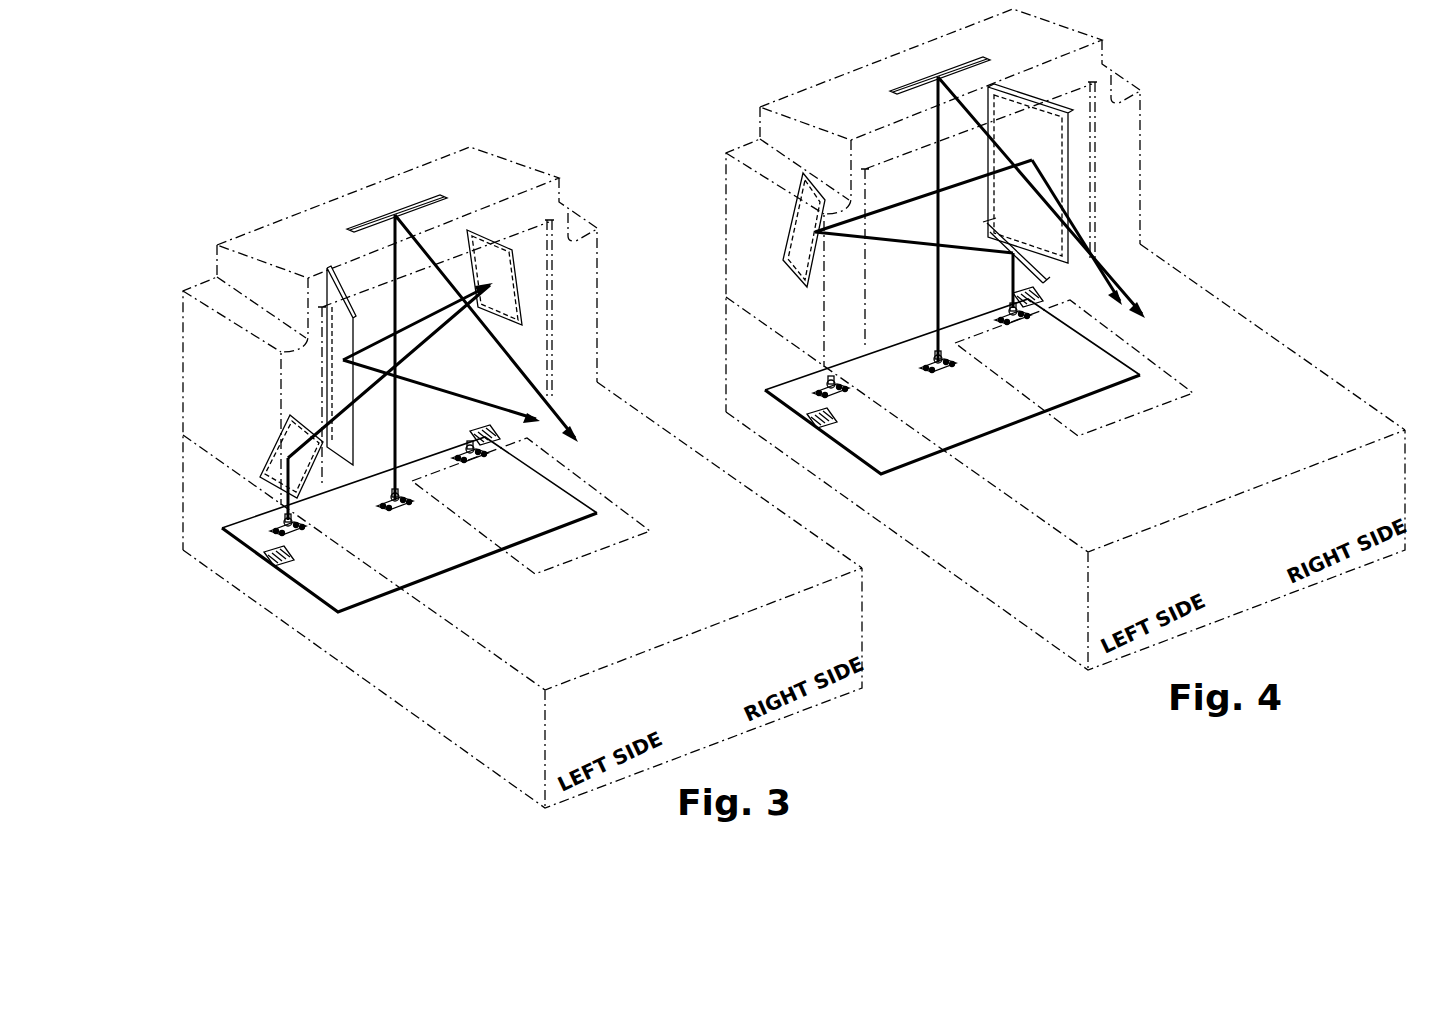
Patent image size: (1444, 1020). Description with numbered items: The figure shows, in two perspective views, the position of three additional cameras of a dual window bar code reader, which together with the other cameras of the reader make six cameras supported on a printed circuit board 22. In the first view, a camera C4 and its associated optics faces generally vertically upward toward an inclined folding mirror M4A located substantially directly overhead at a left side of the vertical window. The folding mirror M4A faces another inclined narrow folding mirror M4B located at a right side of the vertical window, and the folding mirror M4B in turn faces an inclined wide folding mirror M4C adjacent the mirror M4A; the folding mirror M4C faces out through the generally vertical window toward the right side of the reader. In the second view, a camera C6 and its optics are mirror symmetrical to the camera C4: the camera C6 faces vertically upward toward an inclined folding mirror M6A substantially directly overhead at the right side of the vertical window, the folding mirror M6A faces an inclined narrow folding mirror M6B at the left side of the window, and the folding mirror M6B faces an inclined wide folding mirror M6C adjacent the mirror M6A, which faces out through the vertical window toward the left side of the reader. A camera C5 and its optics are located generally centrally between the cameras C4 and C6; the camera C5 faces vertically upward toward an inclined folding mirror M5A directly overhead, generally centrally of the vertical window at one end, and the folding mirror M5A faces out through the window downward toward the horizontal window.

In FIG. 3, the printed circuit board 22 is at (467, 547).
In FIG. 4, the printed circuit board 22 is at (897, 443).
In FIG. 3, the camera C4 is at (288, 535).
In FIG. 4, the camera C4 is at (827, 387).
In FIG. 3, the camera C5 is at (397, 508).
In FIG. 4, the camera C5 is at (942, 366).
In FIG. 3, the camera C6 is at (478, 462).
In FIG. 4, the camera C6 is at (1022, 322).
In FIG. 3, the folding mirror M5A is at (403, 208).
In FIG. 4, the folding mirror M5A is at (933, 76).
In FIG. 3, the folding mirror M4A is at (290, 443).
In FIG. 3, the folding mirror M4B is at (500, 268).
In FIG. 3, the folding mirror M4C is at (337, 358).
In FIG. 4, the folding mirror M6A is at (1050, 278).
In FIG. 4, the folding mirror M6B is at (807, 218).
In FIG. 4, the folding mirror M6C is at (1050, 147).